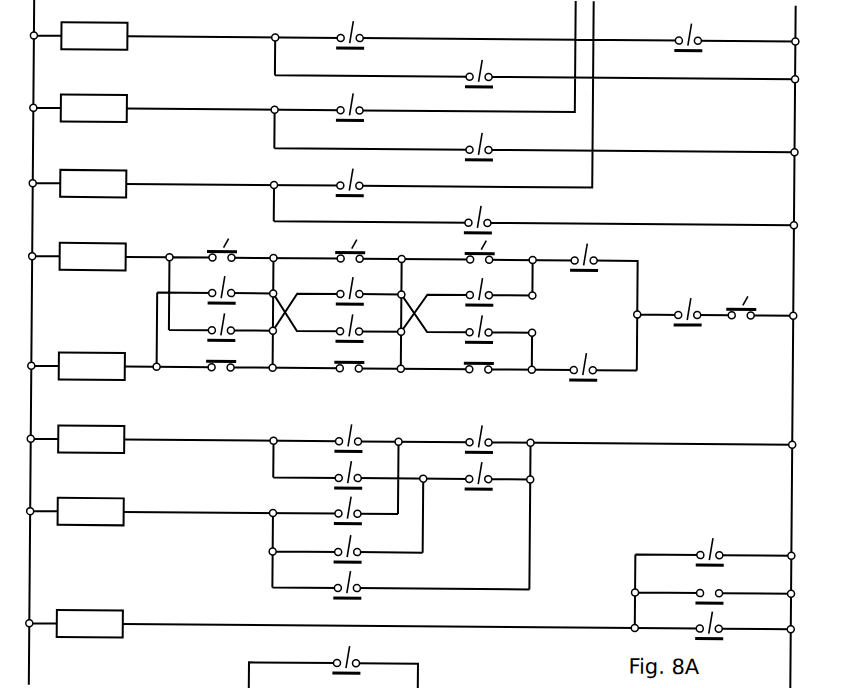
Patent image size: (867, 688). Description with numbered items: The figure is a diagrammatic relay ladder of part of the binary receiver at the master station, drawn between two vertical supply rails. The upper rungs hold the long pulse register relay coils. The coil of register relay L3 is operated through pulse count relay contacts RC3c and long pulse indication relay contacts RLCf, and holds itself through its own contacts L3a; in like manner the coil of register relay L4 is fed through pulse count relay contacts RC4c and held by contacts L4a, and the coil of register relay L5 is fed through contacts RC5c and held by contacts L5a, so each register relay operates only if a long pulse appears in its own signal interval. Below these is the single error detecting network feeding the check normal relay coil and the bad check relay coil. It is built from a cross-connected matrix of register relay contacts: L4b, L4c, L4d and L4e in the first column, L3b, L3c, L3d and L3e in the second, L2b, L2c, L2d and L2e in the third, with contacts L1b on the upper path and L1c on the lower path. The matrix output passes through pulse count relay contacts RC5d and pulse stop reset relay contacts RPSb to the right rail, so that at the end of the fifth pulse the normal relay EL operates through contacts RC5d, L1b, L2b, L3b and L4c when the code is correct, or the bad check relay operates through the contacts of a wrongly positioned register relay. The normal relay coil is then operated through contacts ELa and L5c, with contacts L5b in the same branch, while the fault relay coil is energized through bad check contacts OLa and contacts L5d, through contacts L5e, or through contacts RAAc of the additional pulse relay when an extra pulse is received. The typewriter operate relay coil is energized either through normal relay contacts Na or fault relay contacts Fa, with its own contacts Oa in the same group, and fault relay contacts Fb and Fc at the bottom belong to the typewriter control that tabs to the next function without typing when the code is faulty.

The pulse count relay RC3 contacts RC3c is at (366, 30).
The long pulse indication relay RLC contacts RLCf is at (702, 33).
The register relay L3 contacts L3a is at (489, 69).
The pulse count relay RC4 contacts RC4c is at (366, 102).
The register relay L4 contacts L4a is at (489, 142).
The pulse count relay RC5 contacts RC5c is at (366, 178).
The register relay L5 contacts L5a is at (488, 215).
The register relay L4 contacts L4b is at (232, 248).
The register relay L3 contacts L3b is at (360, 249).
The register relay L2 contacts L2b is at (490, 250).
The register relay L1 contacts L1b is at (594, 252).
The register relay L4 contacts L4c is at (232, 285).
The register relay L3 contacts L3c is at (360, 286).
The register relay L2 contacts L2c is at (489, 287).
The register relay L4 contacts L4d is at (231, 322).
The register relay L3 contacts L3d is at (360, 323).
The register relay L2 contacts L2d is at (489, 324).
The register relay L4 contacts L4e is at (231, 357).
The register relay L3 contacts L3e is at (359, 358).
The register relay L2 contacts L2e is at (489, 359).
The register relay L1 contacts L1c is at (593, 362).
The pulse count relay RC5 contacts RC5d is at (682, 307).
The pulse stop reset relay contacts RPSb is at (752, 305).
The register relay L5 contacts L5b is at (358, 433).
The register relay L5 contacts L5c is at (358, 470).
The register relay L5 contacts L5d is at (358, 506).
The register relay L5 contacts L5e is at (358, 544).
The additional pulse relay RAA contacts RAAc is at (363, 580).
The bad check relay contacts OLa is at (490, 434).
The check normal relay contacts ELa is at (489, 471).
The normal relay contacts Na is at (717, 547).
The fault relay contacts Fa is at (714, 585).
The operate relay contacts Oa is at (716, 621).
The fault relay contacts Fb is at (352, 655).
The fault relay contacts Fc is at (362, 685).